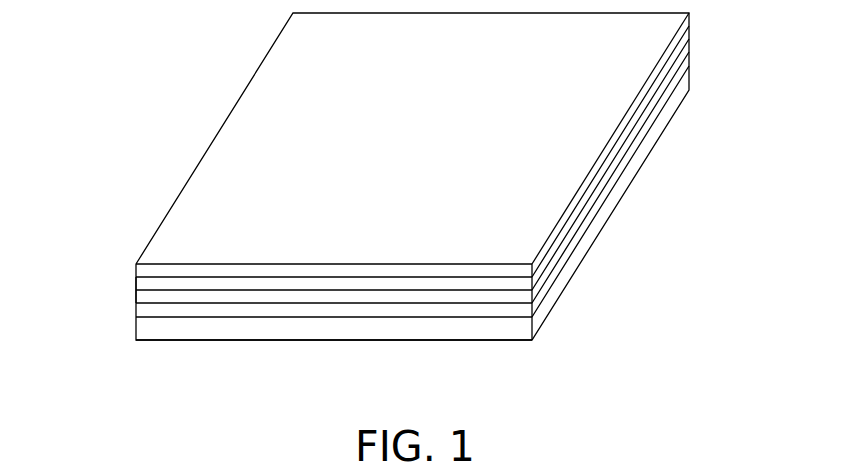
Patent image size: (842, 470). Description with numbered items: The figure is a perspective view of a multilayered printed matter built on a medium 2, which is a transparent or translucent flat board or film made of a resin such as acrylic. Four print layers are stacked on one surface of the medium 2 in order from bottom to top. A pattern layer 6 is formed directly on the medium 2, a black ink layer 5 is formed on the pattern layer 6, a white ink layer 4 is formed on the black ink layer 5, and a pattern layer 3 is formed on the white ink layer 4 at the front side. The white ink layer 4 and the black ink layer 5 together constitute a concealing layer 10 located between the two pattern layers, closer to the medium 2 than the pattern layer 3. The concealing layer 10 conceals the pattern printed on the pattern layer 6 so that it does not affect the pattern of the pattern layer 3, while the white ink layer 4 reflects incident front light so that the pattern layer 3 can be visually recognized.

The medium 2 is at (333, 341).
The pattern layer 3 is at (136, 270).
The white ink layer 4 is at (136, 284).
The black ink layer 5 is at (136, 297).
The pattern layer 6 is at (134, 312).
The concealing layer 10 is at (84, 270).